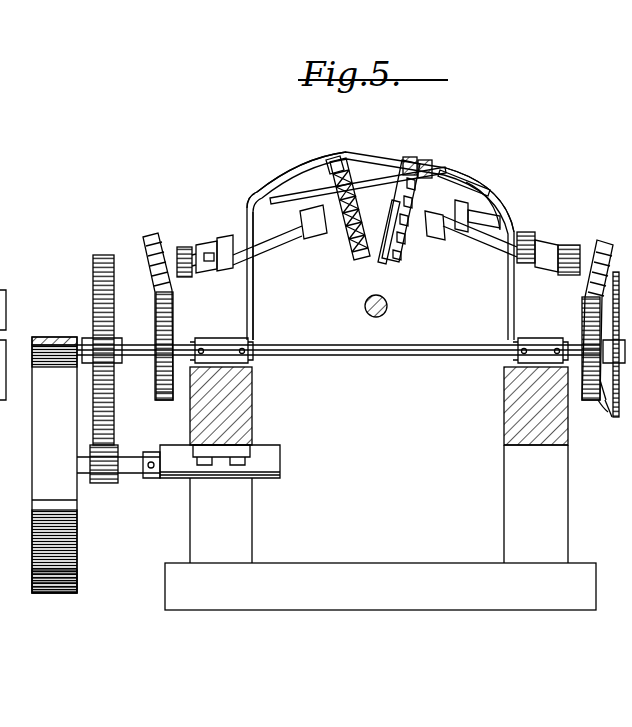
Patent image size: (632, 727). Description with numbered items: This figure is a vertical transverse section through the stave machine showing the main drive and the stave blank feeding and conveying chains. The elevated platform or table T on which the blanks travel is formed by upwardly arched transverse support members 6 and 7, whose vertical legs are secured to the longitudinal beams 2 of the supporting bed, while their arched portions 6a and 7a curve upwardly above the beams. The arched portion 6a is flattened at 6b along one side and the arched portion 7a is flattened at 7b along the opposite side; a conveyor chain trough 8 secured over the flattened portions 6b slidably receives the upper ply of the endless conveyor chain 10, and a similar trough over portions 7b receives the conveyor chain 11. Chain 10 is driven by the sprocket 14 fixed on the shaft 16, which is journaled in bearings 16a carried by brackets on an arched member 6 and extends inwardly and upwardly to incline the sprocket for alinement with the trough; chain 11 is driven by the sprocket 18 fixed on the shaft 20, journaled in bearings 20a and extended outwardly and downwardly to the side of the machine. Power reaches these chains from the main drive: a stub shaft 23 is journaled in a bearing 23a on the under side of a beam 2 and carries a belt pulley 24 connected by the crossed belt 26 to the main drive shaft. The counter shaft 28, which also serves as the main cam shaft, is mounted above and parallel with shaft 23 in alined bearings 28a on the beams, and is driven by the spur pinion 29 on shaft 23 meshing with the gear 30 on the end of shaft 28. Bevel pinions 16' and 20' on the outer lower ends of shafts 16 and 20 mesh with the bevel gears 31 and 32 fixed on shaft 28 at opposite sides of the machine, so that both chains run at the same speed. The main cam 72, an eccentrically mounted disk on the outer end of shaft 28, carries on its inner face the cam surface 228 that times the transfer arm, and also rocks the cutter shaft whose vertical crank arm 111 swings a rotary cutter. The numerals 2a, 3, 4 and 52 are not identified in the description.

The longitudinal beam 2 is at (242, 418).
The standard base portion 2a is at (520, 445).
The pedestal 3 is at (246, 546).
The base 4 is at (361, 572).
The upwardly arched transverse support member 6 is at (513, 222).
The arched portion 6a is at (290, 176).
The flattened portion 6b is at (480, 184).
The upwardly arched transverse support member 7 is at (247, 208).
The arched portion 7a is at (460, 174).
The flattened portion 7b is at (258, 193).
The conveyor chain trough 8 is at (434, 168).
The endless conveyor chain 10 is at (410, 158).
The stave blank conveyor chain 11 is at (330, 168).
The sprocket 14 is at (394, 264).
The shaft 16 is at (511, 237).
The bearing 16a is at (500, 258).
The bevel pinion 16' is at (600, 303).
The sprocket 18 is at (340, 242).
The shaft 20 is at (239, 248).
The bearing 20a is at (303, 240).
The bevel pinion 20' is at (146, 308).
The stub shaft 23 is at (133, 473).
The bearing 23a is at (228, 480).
The belt pulley 24 is at (78, 562).
The crossed belt 26 is at (52, 337).
The counter shaft 28 is at (364, 358).
The bearing 28a is at (215, 348).
The spur pinion 29 is at (103, 484).
The gear 30 is at (93, 288).
The bevel gear 31 is at (604, 390).
The bevel gear 32 is at (164, 402).
The pivot 52 is at (388, 309).
The main cam 72 is at (613, 330).
The vertical crank arm 111 is at (17, 334).
The cam surface 228 is at (605, 398).
The platform T is at (470, 170).